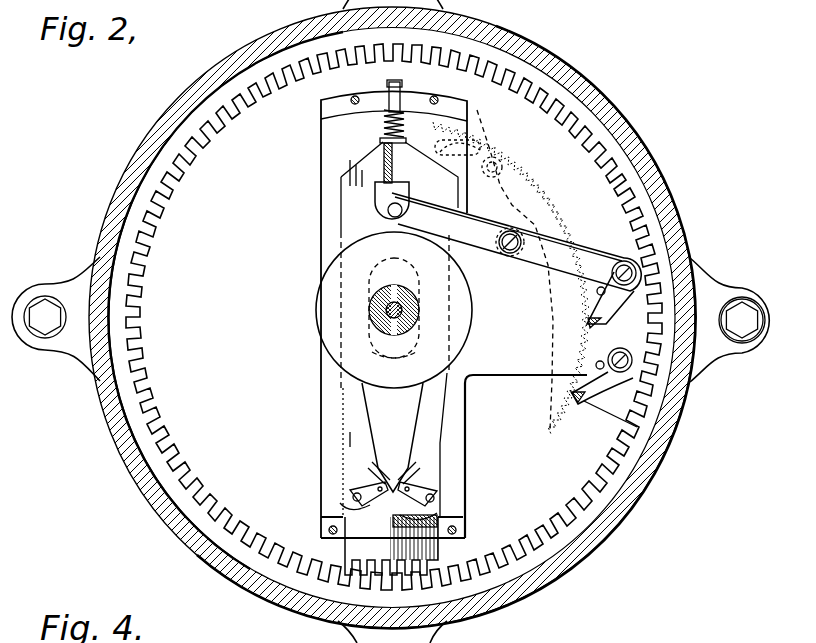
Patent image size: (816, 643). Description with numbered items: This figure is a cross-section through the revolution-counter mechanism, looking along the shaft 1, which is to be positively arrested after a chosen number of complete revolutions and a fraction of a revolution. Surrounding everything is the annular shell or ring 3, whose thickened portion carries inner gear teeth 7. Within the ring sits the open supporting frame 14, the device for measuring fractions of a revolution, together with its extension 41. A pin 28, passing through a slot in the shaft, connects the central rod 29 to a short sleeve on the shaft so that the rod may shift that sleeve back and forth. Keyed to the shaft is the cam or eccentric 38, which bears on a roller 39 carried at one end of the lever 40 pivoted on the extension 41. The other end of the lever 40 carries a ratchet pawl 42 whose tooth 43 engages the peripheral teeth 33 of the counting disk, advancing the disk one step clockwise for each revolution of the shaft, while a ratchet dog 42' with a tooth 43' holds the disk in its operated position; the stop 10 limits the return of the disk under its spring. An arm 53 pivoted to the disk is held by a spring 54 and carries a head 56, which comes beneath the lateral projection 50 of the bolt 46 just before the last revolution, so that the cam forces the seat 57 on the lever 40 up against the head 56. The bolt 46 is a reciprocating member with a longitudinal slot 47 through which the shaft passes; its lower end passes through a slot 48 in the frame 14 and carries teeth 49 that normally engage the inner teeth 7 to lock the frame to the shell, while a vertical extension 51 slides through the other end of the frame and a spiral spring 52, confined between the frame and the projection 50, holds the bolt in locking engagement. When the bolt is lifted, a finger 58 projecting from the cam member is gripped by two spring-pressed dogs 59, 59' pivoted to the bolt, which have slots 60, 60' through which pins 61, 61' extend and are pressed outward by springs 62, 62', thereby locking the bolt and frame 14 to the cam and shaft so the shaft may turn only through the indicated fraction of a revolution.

The shaft 1 is at (378, 323).
The annular shell or ring 3 is at (660, 150).
The inner gear teeth 7 is at (158, 437).
The stop 10 is at (343, 195).
The open supporting frame 14 is at (457, 100).
The pin 28 is at (370, 353).
The rod 29 is at (375, 318).
The teeth 33 is at (545, 171).
The cam or eccentric 38 is at (462, 292).
The roller 39 is at (339, 245).
The lever 40 is at (562, 252).
The extension 41 is at (500, 360).
The ratchet pawl 42 is at (664, 288).
The tooth 43 is at (681, 297).
The ratchet dog 42' is at (664, 387).
The tooth 43' is at (643, 429).
The bolt 46 is at (350, 432).
The longitudinal slot 47 is at (370, 287).
The slot 48 is at (440, 527).
The teeth 49 is at (437, 555).
The lateral projection 50 is at (340, 183).
The vertical extension 51 is at (402, 88).
The spiral spring 52 is at (383, 118).
The arm 53 is at (458, 138).
The spring 54 is at (478, 142).
The head 56 is at (460, 190).
The seat 57 is at (382, 185).
The finger 58 is at (385, 403).
The spring-pressed dog 59 is at (339, 489).
The spring-pressed dog 59' is at (449, 484).
The slot 60 is at (340, 468).
The slot 60' is at (451, 460).
The pin 61 is at (336, 499).
The pin 61' is at (453, 494).
The spring 62 is at (327, 518).
The spring 62' is at (478, 499).